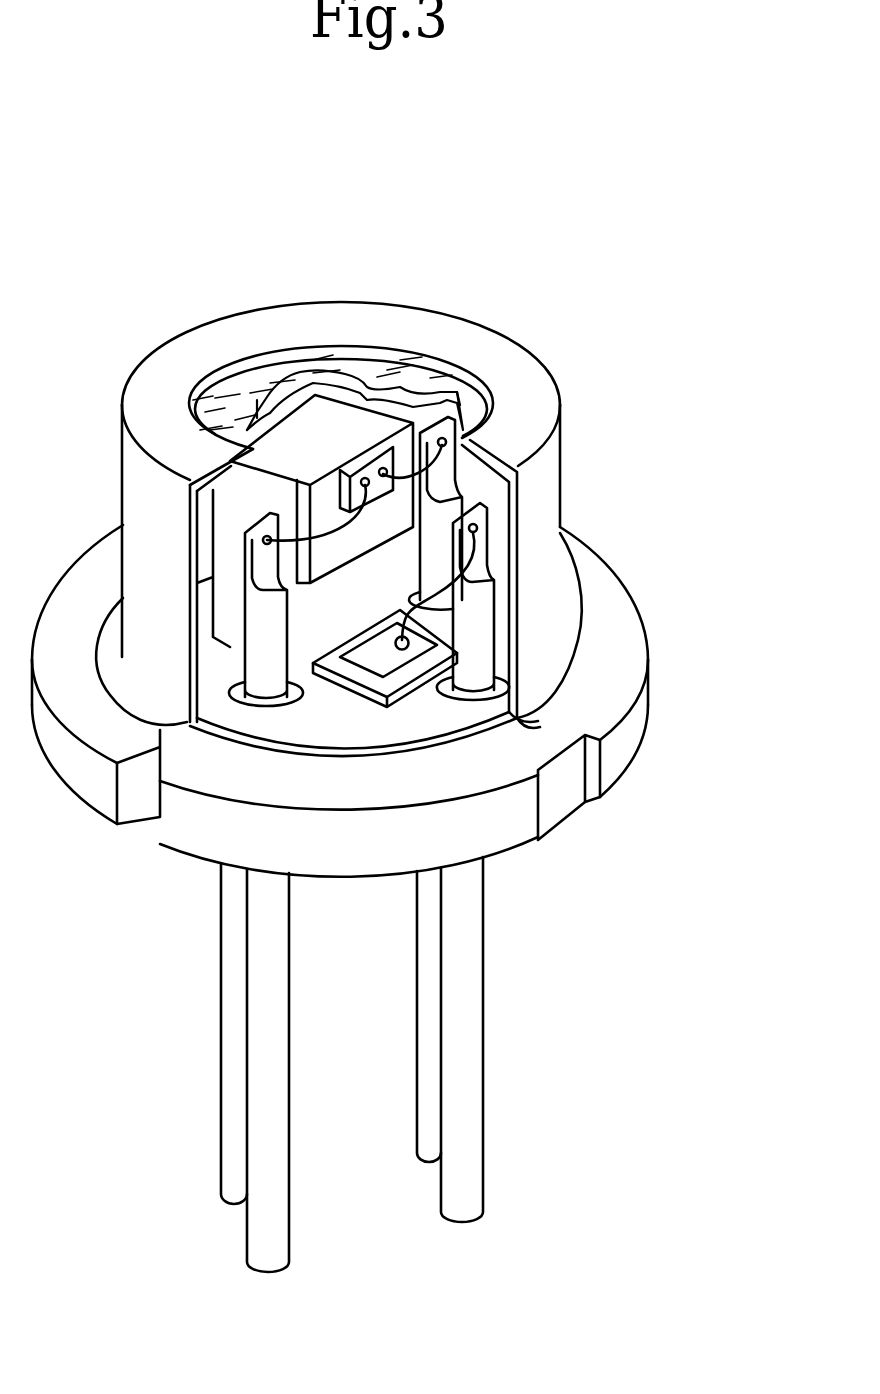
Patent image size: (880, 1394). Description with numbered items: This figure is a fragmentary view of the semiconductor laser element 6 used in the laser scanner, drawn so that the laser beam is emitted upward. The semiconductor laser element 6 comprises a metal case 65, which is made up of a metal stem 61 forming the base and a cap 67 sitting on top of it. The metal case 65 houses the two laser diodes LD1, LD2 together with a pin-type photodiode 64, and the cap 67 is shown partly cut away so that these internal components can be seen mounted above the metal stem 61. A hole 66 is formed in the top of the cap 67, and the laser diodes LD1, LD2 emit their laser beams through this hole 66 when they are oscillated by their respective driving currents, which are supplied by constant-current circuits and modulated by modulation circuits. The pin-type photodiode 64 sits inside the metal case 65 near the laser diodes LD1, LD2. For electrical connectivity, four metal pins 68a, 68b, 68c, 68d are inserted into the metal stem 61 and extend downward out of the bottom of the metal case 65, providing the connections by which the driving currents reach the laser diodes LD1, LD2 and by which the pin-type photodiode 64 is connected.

The semiconductor laser element 6 is at (511, 318).
The metal stem 61 is at (650, 678).
The pin-type photodiode 64 is at (402, 653).
The metal case 65 is at (652, 521).
The hole 66 is at (213, 388).
The cap 67 is at (537, 577).
The metal pin 68a is at (267, 1272).
The metal pin 68b is at (461, 1222).
The metal pin 68c is at (429, 1155).
The metal pin 68d is at (228, 1196).
The laser diode LD1 is at (362, 480).
The laser diode LD2 is at (383, 470).